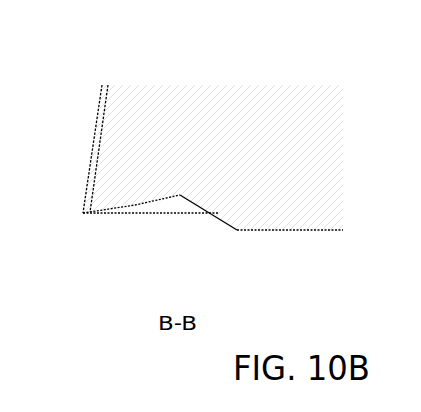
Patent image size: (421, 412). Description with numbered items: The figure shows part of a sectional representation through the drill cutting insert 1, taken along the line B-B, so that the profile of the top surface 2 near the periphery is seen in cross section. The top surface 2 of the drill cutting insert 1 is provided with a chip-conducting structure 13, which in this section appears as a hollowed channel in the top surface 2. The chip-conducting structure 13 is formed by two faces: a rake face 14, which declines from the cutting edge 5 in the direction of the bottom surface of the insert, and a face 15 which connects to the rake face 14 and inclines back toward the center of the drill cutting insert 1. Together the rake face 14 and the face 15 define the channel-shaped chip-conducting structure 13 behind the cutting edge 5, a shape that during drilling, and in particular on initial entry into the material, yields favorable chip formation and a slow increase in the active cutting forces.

The drill cutting insert 1 is at (240, 127).
The top surface 2 is at (262, 230).
The cutting edge 5 is at (83, 213).
The chip-conducting structure 13 is at (162, 208).
The rake face 14 is at (133, 205).
The face 15 is at (221, 217).